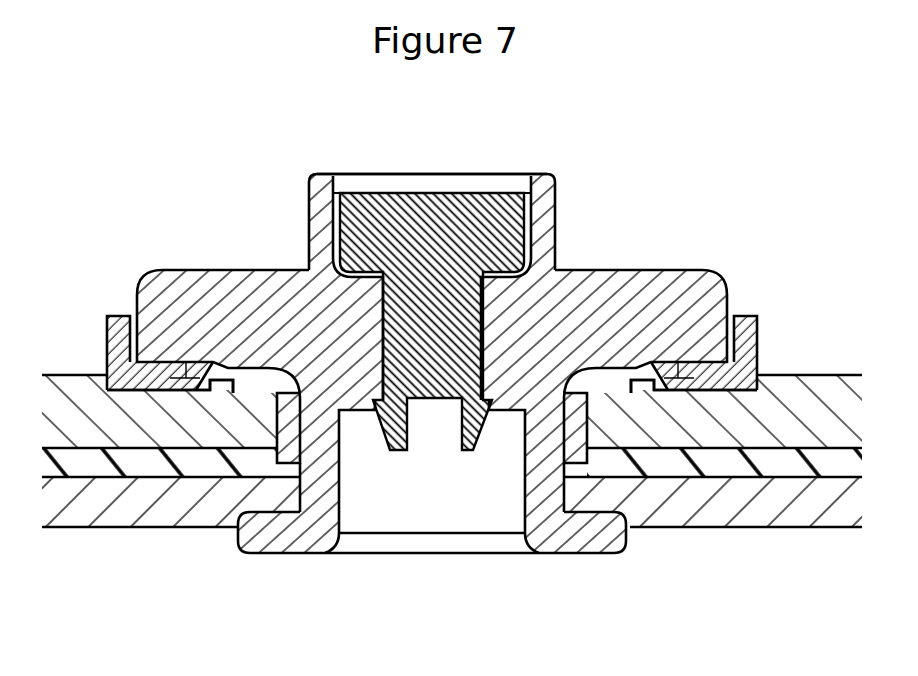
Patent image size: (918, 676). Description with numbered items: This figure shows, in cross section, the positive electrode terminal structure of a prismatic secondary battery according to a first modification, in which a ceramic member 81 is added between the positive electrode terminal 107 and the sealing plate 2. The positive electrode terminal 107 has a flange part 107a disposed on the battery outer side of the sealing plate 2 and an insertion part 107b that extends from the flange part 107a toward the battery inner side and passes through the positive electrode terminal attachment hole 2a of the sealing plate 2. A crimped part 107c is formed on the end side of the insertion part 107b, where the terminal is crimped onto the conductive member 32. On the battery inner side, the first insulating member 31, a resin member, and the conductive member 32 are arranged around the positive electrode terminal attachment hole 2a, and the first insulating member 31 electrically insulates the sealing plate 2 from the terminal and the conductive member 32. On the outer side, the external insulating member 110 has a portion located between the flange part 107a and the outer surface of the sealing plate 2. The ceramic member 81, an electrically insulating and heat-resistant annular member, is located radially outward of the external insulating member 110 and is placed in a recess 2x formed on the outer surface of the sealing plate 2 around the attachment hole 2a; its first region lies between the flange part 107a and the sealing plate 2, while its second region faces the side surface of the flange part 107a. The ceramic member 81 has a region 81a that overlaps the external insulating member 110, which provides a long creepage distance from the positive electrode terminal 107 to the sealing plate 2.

The positive electrode terminal 107 is at (580, 268).
The flange part 107a is at (243, 310).
The insertion part 107b is at (322, 455).
The crimped part 107c is at (303, 530).
The external insulating member 110 is at (200, 372).
The ceramic member 81 is at (113, 365).
The region 81a is at (178, 393).
The sealing plate 2 is at (73, 420).
The positive electrode terminal attachment hole 2a is at (235, 440).
The recess 2x is at (703, 470).
The first insulating member 31 is at (183, 457).
The conductive member 32 is at (75, 495).